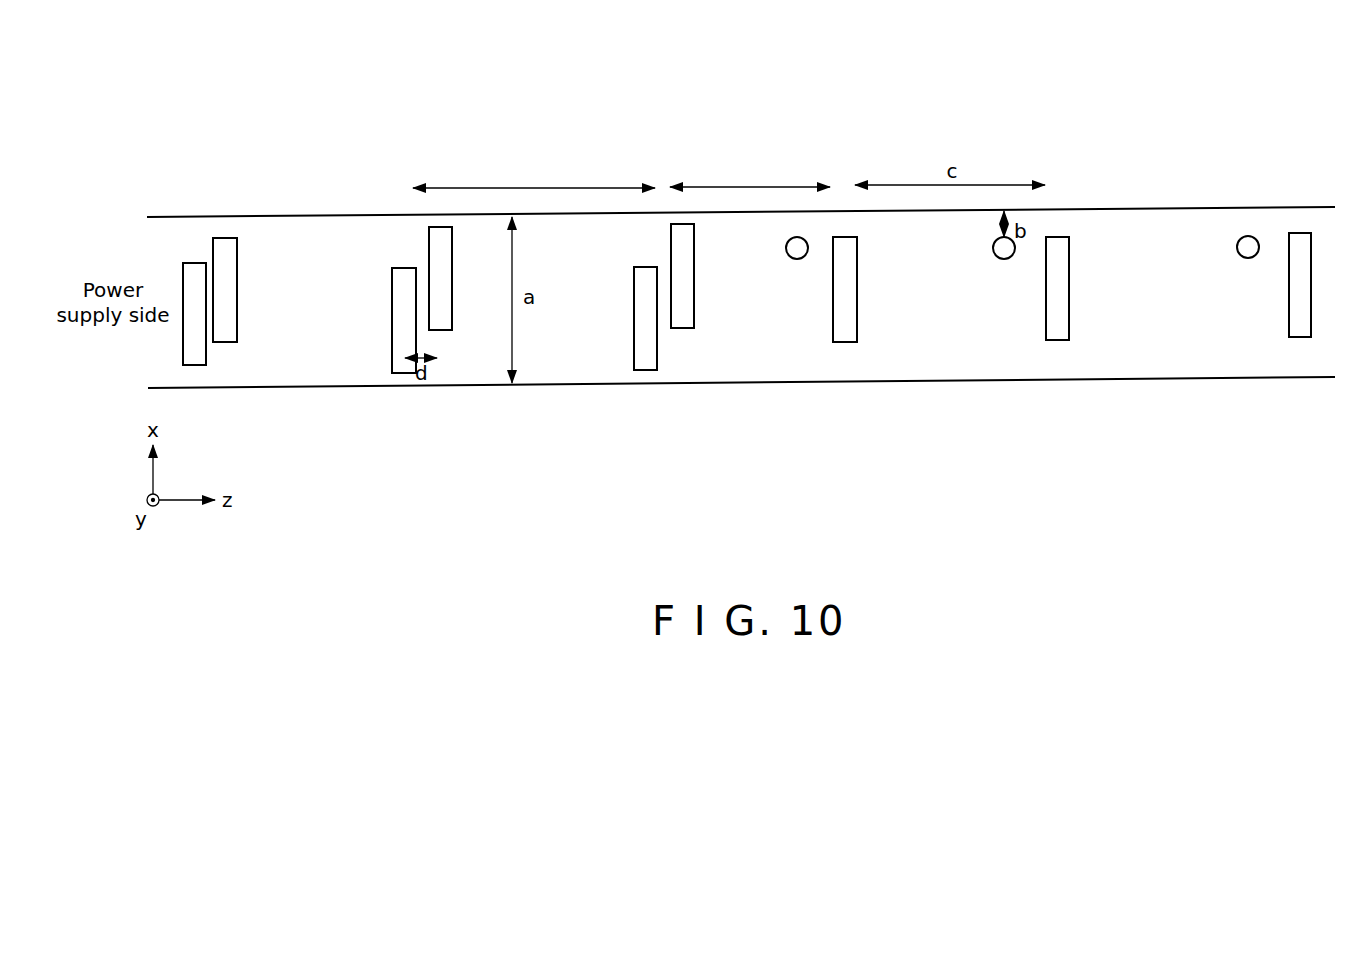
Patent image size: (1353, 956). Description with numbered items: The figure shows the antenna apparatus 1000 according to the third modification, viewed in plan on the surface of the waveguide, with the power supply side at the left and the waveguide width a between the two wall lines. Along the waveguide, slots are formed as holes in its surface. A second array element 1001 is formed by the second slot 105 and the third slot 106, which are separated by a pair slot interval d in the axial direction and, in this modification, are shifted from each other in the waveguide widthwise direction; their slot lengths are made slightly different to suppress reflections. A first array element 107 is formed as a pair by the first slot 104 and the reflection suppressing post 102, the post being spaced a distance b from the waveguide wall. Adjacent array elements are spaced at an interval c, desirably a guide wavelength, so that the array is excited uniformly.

The antenna apparatus 1000 is at (814, 118).
The second array element 1001 is at (427, 347).
The second slot 105 is at (440, 331).
The third slot 106 is at (397, 374).
The first array element 107 is at (1034, 347).
The reflection suppressing post 102 is at (1004, 259).
The first slot 104 is at (1061, 327).